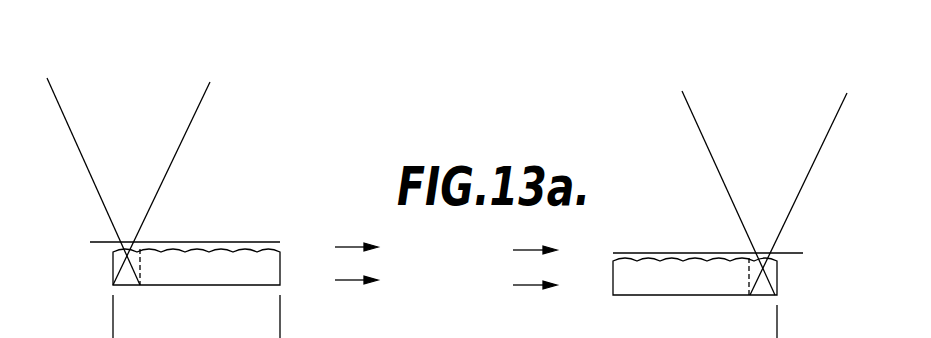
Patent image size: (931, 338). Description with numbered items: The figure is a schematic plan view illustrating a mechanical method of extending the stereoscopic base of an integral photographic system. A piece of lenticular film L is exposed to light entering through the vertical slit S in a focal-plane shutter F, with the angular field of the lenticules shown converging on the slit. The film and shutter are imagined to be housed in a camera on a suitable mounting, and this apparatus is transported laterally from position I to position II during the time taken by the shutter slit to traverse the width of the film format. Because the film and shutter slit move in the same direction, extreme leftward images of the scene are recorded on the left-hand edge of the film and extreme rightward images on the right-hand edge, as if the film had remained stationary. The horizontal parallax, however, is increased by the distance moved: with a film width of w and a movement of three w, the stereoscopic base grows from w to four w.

The vertical slit S is at (133, 243).
The focal-plane shutter F is at (220, 238).
The lenticular film L is at (228, 278).
The position I is at (192, 313).
The position II is at (730, 214).